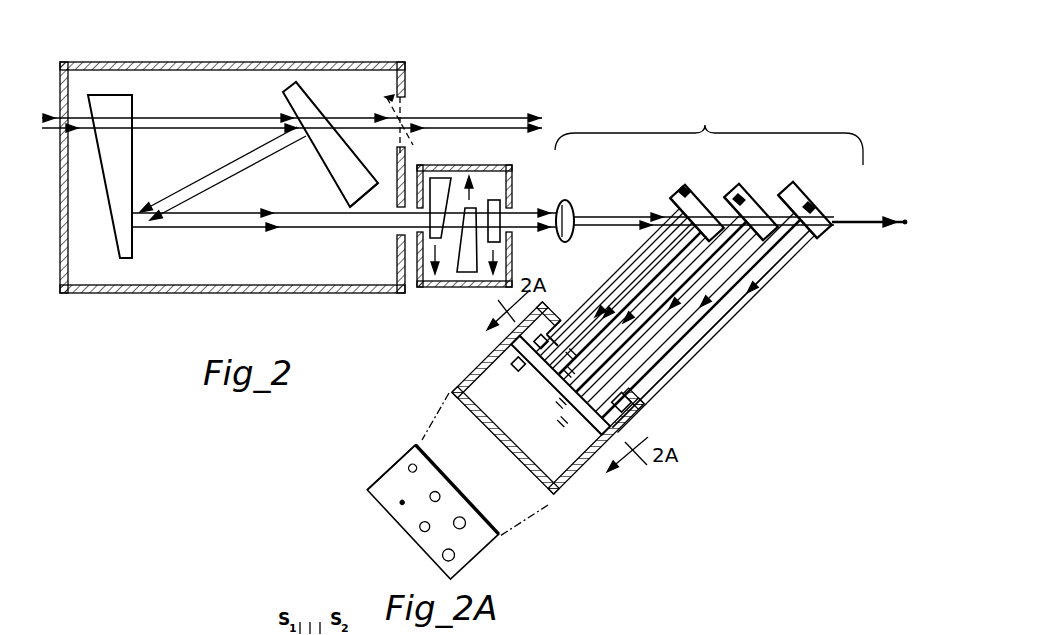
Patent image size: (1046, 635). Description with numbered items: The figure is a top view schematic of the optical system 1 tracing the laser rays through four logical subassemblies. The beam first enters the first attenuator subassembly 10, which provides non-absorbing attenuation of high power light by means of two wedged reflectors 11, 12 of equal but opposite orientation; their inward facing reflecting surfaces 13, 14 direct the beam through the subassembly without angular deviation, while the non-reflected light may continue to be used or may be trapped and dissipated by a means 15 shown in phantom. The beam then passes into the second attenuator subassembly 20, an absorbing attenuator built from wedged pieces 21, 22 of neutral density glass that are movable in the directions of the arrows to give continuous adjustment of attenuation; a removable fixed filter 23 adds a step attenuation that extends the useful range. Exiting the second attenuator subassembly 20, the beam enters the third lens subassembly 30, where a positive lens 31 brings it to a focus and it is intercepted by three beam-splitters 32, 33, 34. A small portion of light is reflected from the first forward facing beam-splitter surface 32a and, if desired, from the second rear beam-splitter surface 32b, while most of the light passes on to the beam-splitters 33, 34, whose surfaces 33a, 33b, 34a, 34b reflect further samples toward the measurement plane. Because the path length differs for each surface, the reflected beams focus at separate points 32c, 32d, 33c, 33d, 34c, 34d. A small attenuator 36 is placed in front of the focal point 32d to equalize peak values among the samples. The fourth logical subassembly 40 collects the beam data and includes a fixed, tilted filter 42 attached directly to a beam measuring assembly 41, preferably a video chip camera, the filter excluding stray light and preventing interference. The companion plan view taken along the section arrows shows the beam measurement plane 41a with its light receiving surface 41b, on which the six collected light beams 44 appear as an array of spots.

In FIG. 2, the optical system 1 is at (422, 54).
In FIG. 2, the first attenuator subassembly 10 is at (106, 58).
In FIG. 2, the wedged reflector 11 is at (128, 258).
In FIG. 2, the wedged reflector 12 is at (360, 192).
In FIG. 2, the reflecting surface 13 is at (132, 107).
In FIG. 2, the reflecting surface 14 is at (324, 170).
In FIG. 2, the beam trapping means 15 is at (415, 97).
In FIG. 2, the second attenuator subassembly 20 is at (484, 162).
In FIG. 2, the wedged piece 21 is at (440, 178).
In FIG. 2, the wedged piece 22 is at (464, 276).
In FIG. 2, the removable fixed filter 23 is at (500, 203).
In FIG. 2, the third lens subassembly 30 is at (709, 136).
In FIG. 2, the positive lens 31 is at (560, 208).
In FIG. 2, the first beam-splitter 32 is at (672, 190).
In FIG. 2, the first forward facing beam-splitter surface 32a is at (668, 210).
In FIG. 2, the second rear beam-splitter surface 32b is at (686, 186).
In FIG. 2, the focal point 32c is at (523, 372).
In FIG. 2, the focal point 32d is at (544, 350).
In FIG. 2, the beam-splitter 33 is at (732, 183).
In FIG. 2, the beam-splitter surface 33a is at (724, 198).
In FIG. 2, the beam-splitter surface 33b is at (745, 196).
In FIG. 2, the focal point 33c is at (612, 335).
In FIG. 2, the focal point 33d is at (669, 312).
In FIG. 2, the beam-splitter 34 is at (800, 188).
In FIG. 2, the beam-splitter surface 34a is at (778, 195).
In FIG. 2, the beam-splitter surface 34b is at (814, 206).
In FIG. 2, the focal point 34c is at (700, 309).
In FIG. 2, the focal point 34d is at (747, 290).
In FIG. 2, the attenuator 36 is at (590, 320).
In FIG. 2, the fourth logical subassembly 40 is at (545, 505).
In FIG. 2, the beam measuring assembly 41 is at (585, 424).
In FIG. 2A, the beam measuring assembly 41 is at (505, 545).
In FIG. 2A, the beam measurement plane 41a is at (478, 552).
In FIG. 2A, the light receiving surface 41b is at (400, 508).
In FIG. 2, the fixed filter 42 is at (630, 412).
In FIG. 2A, the collected light beams 44 is at (442, 497).